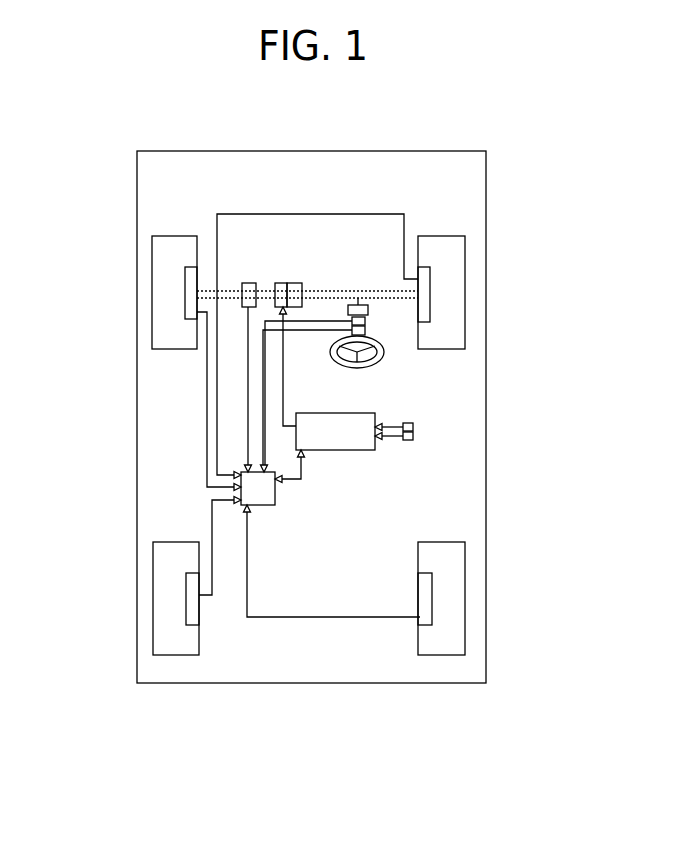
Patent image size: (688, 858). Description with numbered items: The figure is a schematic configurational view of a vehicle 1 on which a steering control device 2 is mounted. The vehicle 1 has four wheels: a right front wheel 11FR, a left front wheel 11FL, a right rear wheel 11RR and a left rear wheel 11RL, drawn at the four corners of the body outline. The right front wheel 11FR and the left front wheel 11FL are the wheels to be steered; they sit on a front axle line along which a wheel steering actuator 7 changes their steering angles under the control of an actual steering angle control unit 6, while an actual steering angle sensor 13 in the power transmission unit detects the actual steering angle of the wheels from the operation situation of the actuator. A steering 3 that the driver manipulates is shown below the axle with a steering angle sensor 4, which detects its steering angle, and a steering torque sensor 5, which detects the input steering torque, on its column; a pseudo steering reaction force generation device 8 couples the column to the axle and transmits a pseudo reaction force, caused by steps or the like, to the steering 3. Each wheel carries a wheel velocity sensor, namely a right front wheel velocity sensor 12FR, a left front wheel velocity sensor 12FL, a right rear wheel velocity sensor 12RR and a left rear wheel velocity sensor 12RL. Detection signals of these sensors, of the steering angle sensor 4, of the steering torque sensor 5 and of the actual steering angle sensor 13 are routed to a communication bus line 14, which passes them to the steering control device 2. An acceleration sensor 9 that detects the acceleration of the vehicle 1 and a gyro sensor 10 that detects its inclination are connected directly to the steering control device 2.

The vehicle 1 is at (430, 151).
The steering control device 2 is at (343, 450).
The steering 3 is at (385, 360).
The steering angle sensor 4 is at (366, 321).
The steering torque sensor 5 is at (366, 330).
The actual steering angle control unit 6 is at (282, 283).
The wheel steering actuator 7 is at (297, 283).
The pseudo steering reaction force generation device 8 is at (360, 305).
The acceleration sensor 9 is at (413, 436).
The gyro sensor 10 is at (413, 426).
The actual steering angle sensor 13 is at (248, 283).
The communication bus line 14 is at (265, 506).
The left front wheel 11FL is at (152, 312).
The right front wheel 11FR is at (465, 307).
The left rear wheel 11RL is at (152, 623).
The right rear wheel 11RR is at (465, 613).
The left front wheel velocity sensor 12FL is at (190, 280).
The right front wheel velocity sensor 12FR is at (430, 280).
The left rear wheel velocity sensor 12RL is at (188, 587).
The right rear wheel velocity sensor 12RR is at (427, 585).